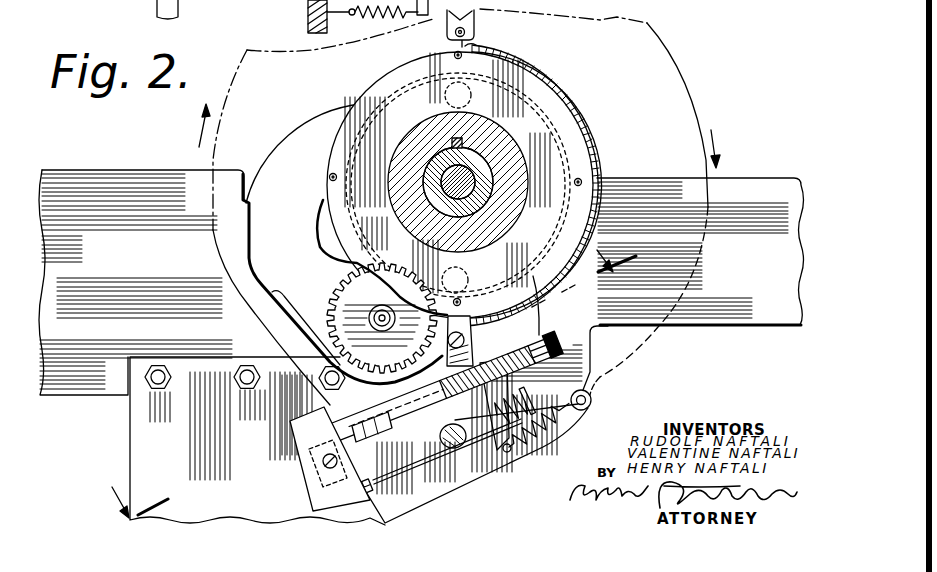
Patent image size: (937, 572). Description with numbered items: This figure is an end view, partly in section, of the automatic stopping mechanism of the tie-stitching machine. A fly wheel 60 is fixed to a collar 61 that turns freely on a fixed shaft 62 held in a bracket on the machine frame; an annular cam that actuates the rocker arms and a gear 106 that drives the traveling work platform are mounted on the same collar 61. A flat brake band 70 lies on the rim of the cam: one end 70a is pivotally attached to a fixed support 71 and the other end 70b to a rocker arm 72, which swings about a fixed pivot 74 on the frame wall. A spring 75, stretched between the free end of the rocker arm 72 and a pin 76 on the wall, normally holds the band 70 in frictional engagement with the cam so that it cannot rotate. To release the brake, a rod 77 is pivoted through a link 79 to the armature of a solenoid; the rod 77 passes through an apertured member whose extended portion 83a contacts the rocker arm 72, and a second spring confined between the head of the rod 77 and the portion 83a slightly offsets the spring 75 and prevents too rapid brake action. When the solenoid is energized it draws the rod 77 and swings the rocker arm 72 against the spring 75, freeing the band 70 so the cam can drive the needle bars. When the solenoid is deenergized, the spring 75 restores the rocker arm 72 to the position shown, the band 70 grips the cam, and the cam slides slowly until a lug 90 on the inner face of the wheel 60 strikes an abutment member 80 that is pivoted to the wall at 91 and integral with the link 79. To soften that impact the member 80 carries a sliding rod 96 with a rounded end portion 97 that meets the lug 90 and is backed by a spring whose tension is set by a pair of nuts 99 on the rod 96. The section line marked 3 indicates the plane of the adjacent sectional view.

The section line 3- 3 is at (368, 374).
The fly wheel 60 is at (676, 82).
The collar 61 is at (470, 184).
The fixed shaft 62 is at (462, 165).
The brake band 70 is at (541, 75).
The band end 70a is at (488, 26).
The band end 70b is at (466, 312).
The fixed support 71 is at (478, 22).
The rocker arm 72 is at (497, 452).
The fixed pivot 74 is at (465, 338).
The spring 75 is at (527, 452).
The pin 76 is at (592, 403).
The rod 77 is at (420, 458).
The link 79 is at (318, 488).
The abutment member 80 is at (391, 409).
The extended portion 83a is at (536, 383).
The lug 90 is at (591, 348).
The pivot 91 is at (292, 436).
The rod 96 is at (545, 296).
The rounded end portion 97 is at (603, 374).
The nuts 99 is at (358, 496).
The gear 106 is at (563, 174).